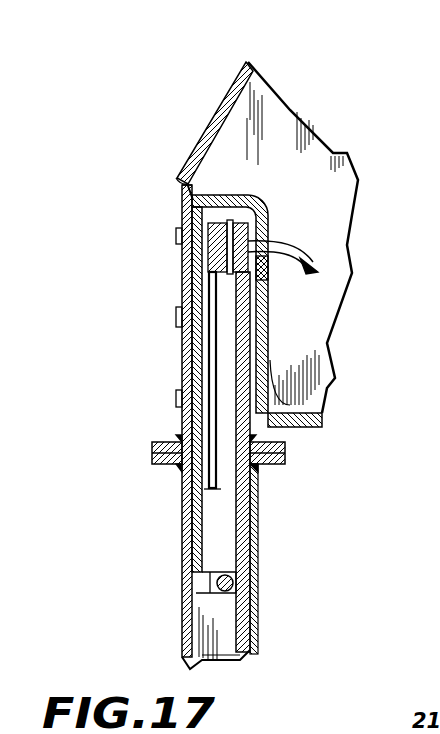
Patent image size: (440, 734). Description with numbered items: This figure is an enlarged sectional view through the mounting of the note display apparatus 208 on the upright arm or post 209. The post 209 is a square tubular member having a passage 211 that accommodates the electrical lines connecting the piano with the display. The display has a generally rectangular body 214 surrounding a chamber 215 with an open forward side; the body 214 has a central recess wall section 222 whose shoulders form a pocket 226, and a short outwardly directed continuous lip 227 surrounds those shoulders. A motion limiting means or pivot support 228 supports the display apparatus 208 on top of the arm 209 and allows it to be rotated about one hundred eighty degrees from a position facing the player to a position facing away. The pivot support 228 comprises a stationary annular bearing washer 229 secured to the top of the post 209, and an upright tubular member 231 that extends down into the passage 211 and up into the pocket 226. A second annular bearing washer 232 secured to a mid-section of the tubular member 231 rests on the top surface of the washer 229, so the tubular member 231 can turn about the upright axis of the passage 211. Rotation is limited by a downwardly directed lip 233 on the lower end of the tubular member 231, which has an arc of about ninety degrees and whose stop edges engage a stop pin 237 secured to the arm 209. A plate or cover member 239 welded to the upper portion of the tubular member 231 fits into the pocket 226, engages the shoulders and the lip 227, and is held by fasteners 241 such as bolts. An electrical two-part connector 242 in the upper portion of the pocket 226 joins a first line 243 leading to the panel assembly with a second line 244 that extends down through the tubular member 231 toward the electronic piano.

The note display apparatus 208 is at (185, 130).
The arm or post 209 is at (186, 641).
The passage 211 is at (232, 638).
The body 214 is at (232, 75).
The chamber 215 is at (273, 132).
The central recess wall section 222 is at (267, 353).
The pocket 226 is at (240, 282).
The lip 227 is at (177, 177).
The motion limiting means or pivot support 228 is at (160, 433).
The annular plate or bearing washer 229 is at (278, 464).
The tubular member 231 is at (193, 350).
The annular plate or bearing washer 232 is at (285, 447).
The lip 233 is at (196, 582).
The stop pin 237 is at (234, 583).
The plate or cover member 239 is at (181, 204).
The fasteners 241 is at (176, 238).
The electrical two-part connector 242 is at (253, 212).
The first line 243 is at (300, 249).
The second line 244 is at (214, 479).